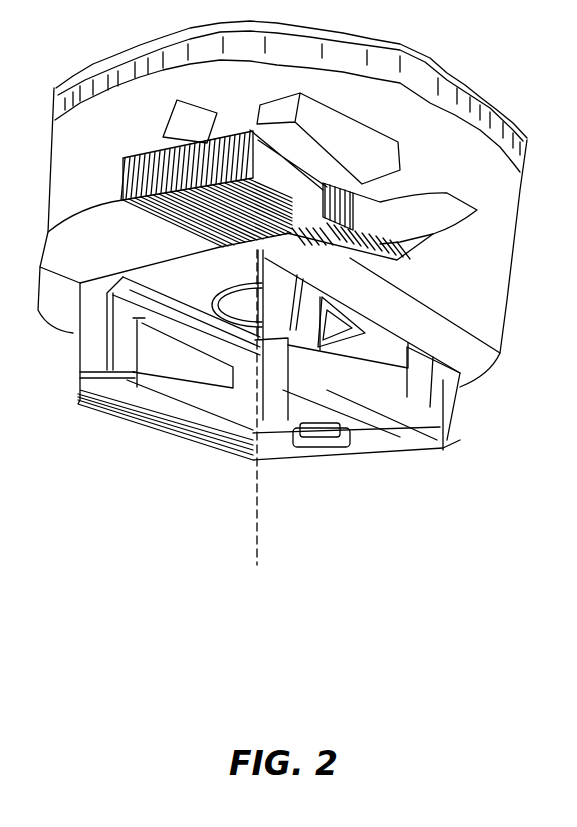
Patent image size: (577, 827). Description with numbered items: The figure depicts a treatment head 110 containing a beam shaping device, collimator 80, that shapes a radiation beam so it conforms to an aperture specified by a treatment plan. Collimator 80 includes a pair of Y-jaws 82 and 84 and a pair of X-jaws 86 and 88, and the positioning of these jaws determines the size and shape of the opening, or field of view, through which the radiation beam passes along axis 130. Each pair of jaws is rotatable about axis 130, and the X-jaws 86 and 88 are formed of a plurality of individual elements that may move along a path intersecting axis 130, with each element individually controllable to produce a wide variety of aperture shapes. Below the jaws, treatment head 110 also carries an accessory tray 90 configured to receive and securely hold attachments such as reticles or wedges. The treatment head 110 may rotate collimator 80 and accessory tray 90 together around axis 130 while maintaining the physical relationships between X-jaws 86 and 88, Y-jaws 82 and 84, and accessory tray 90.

The collimator 80 is at (440, 155).
The Y-jaw 82 is at (186, 99).
The Y-jaw 84 is at (346, 112).
The X-jaw 86 is at (143, 157).
The X-jaw 88 is at (427, 240).
The accessory tray 90 is at (450, 425).
The treatment head 110 is at (523, 208).
The axis 130 is at (267, 431).